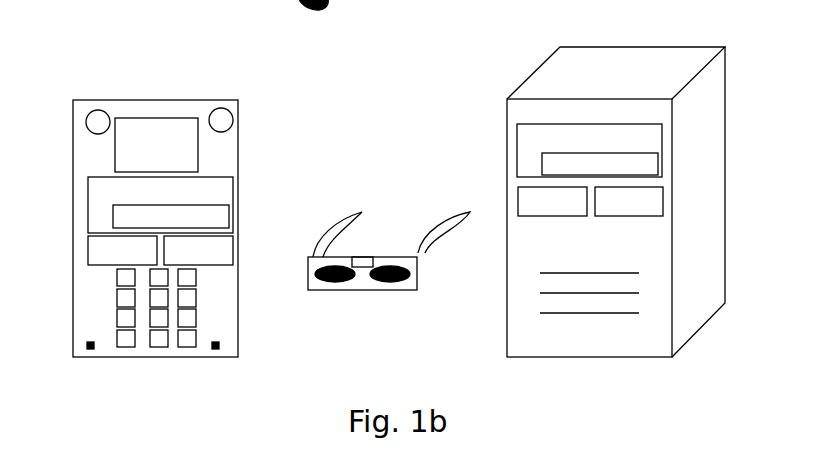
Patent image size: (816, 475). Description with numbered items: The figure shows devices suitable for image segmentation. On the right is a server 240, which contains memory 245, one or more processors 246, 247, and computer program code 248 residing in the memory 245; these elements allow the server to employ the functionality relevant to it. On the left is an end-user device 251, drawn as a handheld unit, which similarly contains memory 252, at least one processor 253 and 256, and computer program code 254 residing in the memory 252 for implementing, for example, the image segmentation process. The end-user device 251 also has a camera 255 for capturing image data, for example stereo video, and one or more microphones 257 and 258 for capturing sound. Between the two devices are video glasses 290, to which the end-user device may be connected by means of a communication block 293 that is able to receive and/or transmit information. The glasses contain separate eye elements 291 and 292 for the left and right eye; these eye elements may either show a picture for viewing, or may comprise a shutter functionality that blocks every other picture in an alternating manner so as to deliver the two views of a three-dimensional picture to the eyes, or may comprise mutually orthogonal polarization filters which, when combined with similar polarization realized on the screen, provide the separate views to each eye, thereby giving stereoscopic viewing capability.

The server 240 is at (630, 70).
The memory 245 is at (515, 172).
The processor 246 is at (516, 208).
The processor 247 is at (665, 203).
The computer program code 248 is at (662, 160).
The end-user device 251 is at (242, 128).
The memory 252 is at (88, 175).
The processor 253 is at (87, 252).
The computer program code 254 is at (235, 220).
The camera 255 is at (98, 101).
The processor 256 is at (235, 258).
The microphone 257 is at (215, 340).
The microphone 258 is at (90, 340).
The video glasses 290 is at (342, 210).
The eye element 291 is at (330, 286).
The eye element 292 is at (388, 288).
The communication block 293 is at (362, 256).